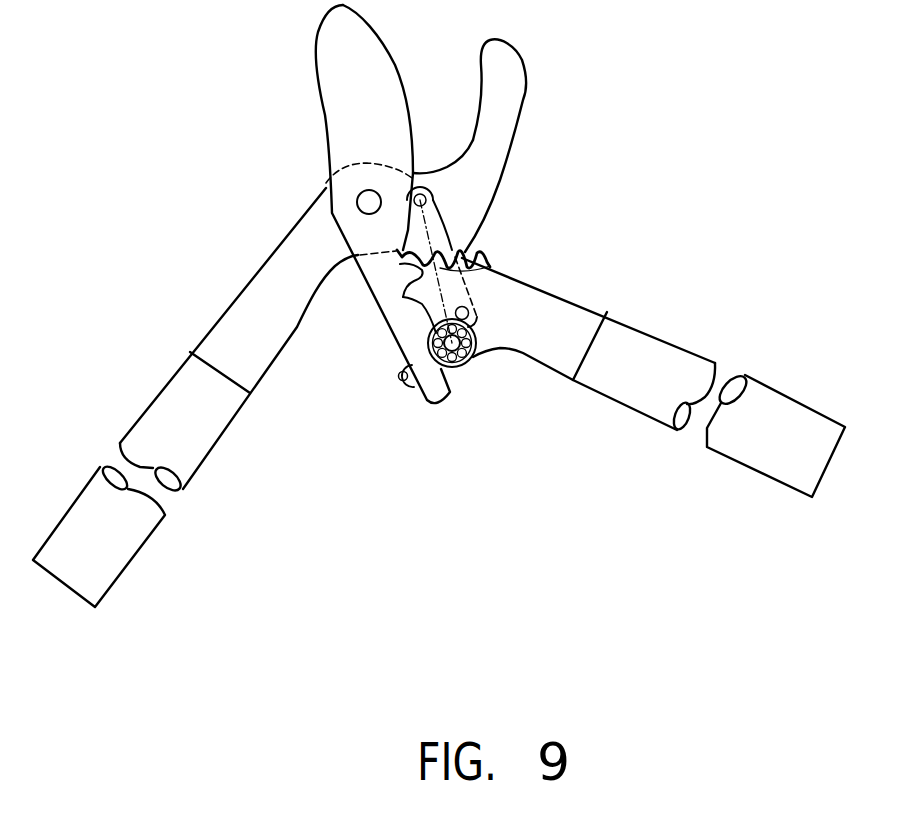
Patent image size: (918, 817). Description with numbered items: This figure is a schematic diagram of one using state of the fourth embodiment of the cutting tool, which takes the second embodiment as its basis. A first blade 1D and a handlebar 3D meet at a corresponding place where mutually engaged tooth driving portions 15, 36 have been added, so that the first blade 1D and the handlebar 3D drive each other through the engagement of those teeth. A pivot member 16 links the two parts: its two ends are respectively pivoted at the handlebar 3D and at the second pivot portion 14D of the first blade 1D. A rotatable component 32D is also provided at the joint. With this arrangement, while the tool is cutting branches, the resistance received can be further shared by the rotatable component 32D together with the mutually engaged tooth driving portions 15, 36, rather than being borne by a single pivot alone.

The first blade 1D is at (240, 256).
The handlebar 3D is at (605, 285).
The second pivot portion 14D is at (421, 194).
The tooth driving portion 15 is at (449, 252).
The pivot member 16 is at (443, 217).
The tooth driving portion 36 is at (456, 268).
The rotatable component 32D is at (468, 365).